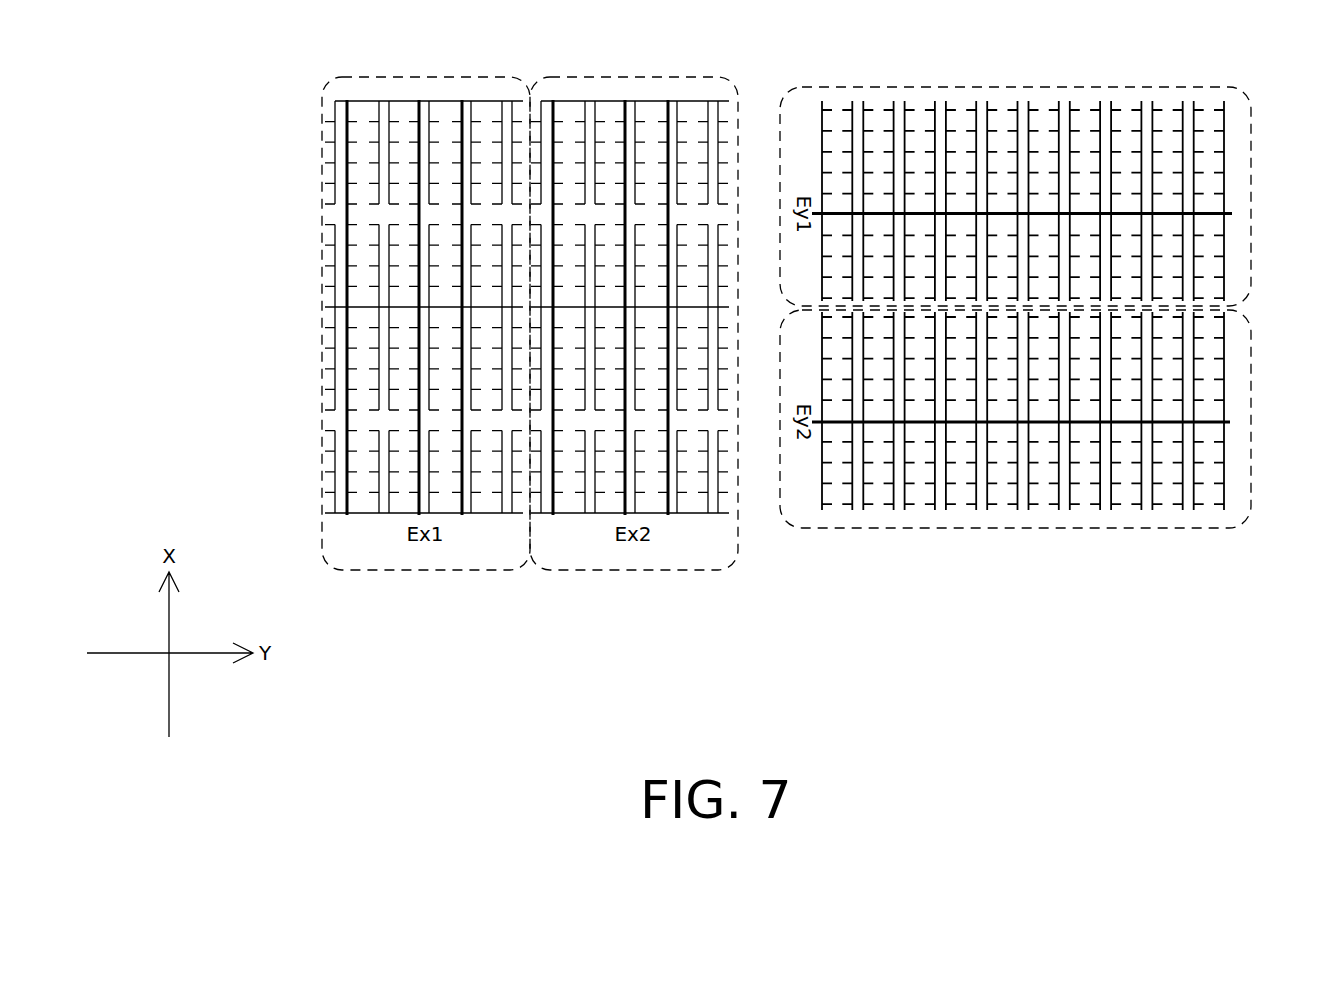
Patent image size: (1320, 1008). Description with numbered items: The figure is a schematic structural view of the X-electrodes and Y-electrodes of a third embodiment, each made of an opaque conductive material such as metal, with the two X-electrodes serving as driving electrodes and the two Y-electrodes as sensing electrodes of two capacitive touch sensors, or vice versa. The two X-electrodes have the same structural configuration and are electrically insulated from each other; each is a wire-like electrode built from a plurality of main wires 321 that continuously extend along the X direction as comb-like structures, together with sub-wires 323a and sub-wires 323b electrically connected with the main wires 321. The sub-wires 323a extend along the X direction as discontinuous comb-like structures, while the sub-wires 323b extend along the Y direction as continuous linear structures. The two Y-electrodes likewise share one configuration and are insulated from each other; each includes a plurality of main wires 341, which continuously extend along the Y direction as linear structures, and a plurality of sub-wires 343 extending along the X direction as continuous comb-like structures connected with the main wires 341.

The main wire 321 is at (352, 103).
The sub-wire 323a is at (335, 153).
The sub-wire 323b is at (443, 100).
The main wire 341 is at (1232, 214).
The sub-wire 343 is at (825, 107).